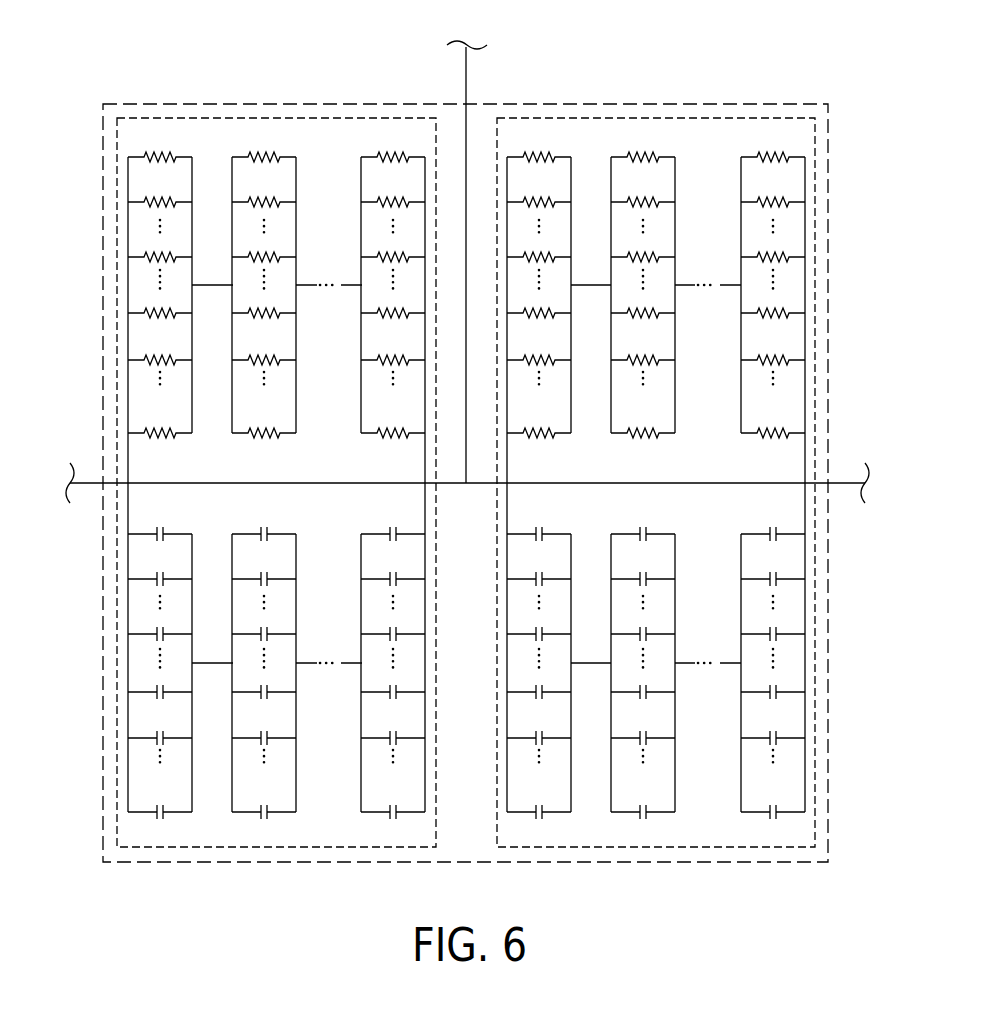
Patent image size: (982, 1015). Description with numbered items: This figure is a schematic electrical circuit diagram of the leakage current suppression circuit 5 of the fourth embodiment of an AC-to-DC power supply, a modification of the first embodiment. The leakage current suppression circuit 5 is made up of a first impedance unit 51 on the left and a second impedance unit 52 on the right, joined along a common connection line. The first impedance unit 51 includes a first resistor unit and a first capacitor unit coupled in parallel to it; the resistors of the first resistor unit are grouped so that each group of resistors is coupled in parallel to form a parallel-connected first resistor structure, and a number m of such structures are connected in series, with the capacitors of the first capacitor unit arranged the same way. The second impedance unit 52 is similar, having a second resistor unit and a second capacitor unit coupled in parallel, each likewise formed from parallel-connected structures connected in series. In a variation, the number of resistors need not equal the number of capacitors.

The leakage current suppression circuit 5 is at (612, 105).
The first impedance unit 51 is at (310, 120).
The second impedance unit 52 is at (700, 117).